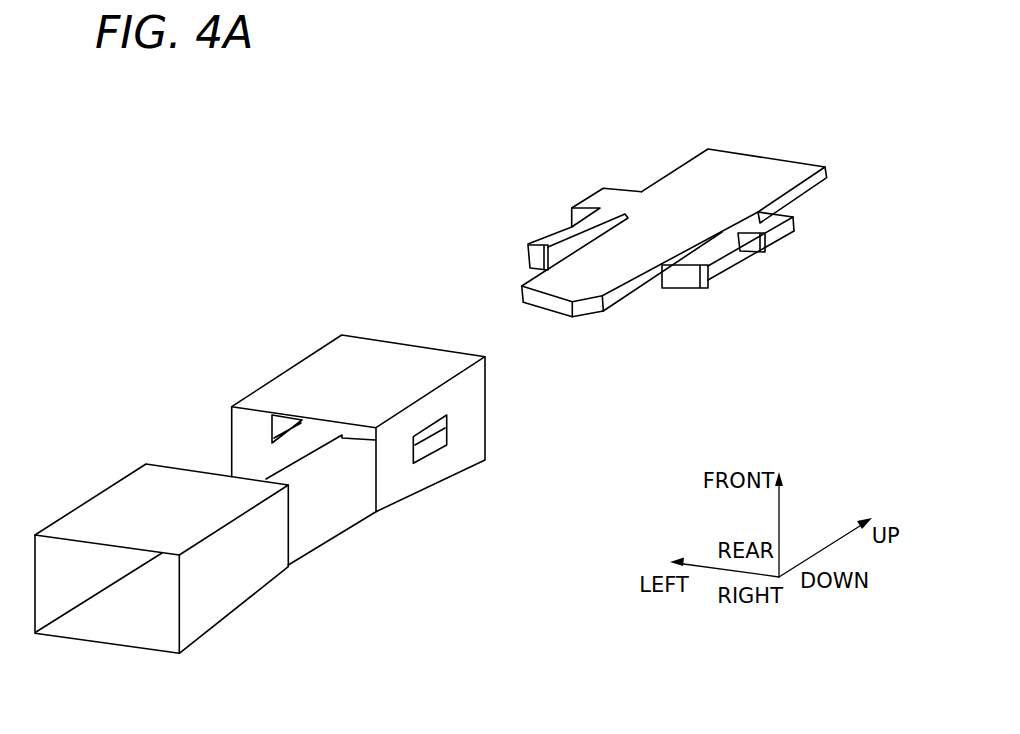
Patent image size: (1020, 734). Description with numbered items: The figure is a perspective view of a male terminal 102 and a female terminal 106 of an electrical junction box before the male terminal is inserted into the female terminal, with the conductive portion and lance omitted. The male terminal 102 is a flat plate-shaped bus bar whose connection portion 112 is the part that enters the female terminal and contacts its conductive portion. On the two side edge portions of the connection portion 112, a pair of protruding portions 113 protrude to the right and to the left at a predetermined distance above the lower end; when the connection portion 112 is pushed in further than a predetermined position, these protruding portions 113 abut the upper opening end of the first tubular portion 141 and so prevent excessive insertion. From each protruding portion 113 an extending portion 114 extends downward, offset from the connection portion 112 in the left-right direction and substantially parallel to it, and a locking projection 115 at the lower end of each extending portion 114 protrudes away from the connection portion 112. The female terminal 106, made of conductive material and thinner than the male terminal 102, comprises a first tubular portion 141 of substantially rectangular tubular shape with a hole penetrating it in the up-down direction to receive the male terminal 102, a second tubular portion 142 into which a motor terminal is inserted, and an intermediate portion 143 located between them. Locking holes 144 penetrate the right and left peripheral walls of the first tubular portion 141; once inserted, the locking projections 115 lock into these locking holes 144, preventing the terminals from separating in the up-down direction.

The male terminal 102 is at (648, 146).
The female terminal 106 is at (299, 494).
The connection portion 112 is at (597, 264).
The protruding portions 113 is at (603, 196).
The extending portions 114 is at (570, 231).
The locking projections 115 is at (537, 246).
The first tubular portion 141 is at (472, 440).
The second tubular portion 142 is at (225, 578).
The intermediate portion 143 is at (303, 531).
The locking holes 144 is at (423, 453).